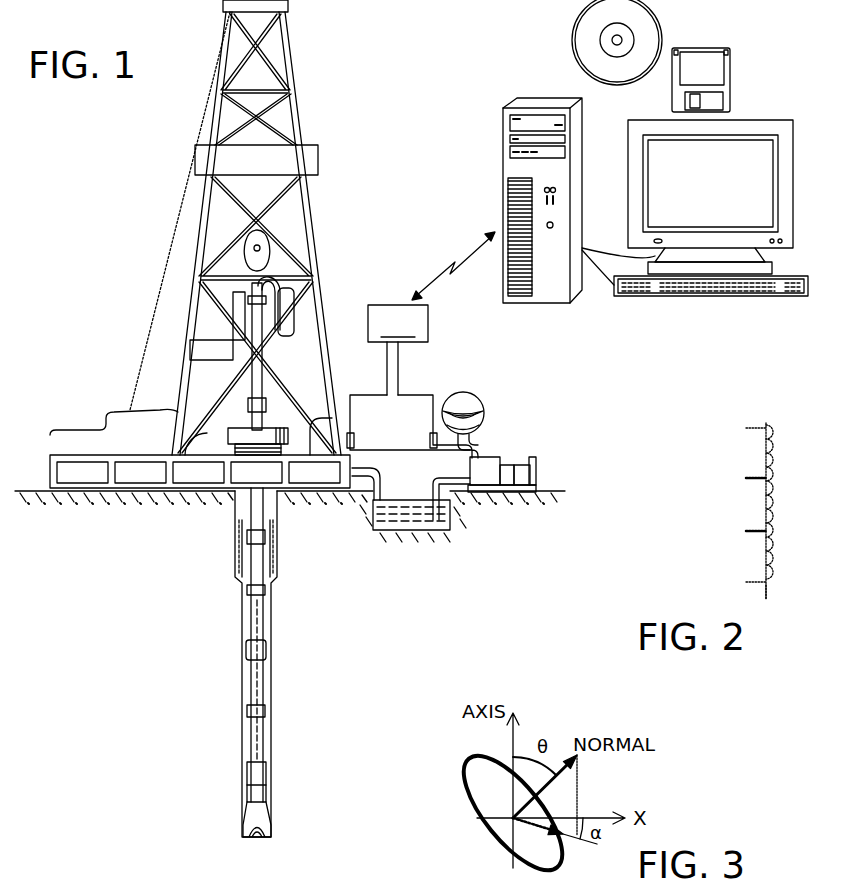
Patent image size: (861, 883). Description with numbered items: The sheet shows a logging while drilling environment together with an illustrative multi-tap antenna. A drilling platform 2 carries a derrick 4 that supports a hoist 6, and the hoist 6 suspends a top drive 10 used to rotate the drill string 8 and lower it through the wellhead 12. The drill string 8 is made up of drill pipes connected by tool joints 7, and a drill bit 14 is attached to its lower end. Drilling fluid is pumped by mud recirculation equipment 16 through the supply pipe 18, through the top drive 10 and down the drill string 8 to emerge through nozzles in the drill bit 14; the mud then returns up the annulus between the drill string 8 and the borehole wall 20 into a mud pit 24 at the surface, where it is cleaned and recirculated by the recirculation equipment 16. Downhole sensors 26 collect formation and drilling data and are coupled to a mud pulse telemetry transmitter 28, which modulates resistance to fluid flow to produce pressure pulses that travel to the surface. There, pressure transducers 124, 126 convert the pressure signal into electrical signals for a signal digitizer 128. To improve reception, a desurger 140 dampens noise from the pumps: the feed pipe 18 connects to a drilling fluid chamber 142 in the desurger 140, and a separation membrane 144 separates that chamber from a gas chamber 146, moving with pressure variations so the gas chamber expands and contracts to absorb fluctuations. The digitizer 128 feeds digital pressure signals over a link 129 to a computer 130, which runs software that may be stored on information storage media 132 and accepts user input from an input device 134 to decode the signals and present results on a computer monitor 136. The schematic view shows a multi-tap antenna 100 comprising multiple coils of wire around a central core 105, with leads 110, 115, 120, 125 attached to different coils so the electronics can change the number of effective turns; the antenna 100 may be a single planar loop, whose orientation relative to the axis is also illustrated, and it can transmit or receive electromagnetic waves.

In FIG. 1, the drilling platform 2 is at (50, 458).
In FIG. 1, the derrick 4 is at (302, 114).
In FIG. 1, the hoist 6 is at (268, 245).
In FIG. 1, the tool joints 7 is at (248, 591).
In FIG. 1, the drill string 8 is at (262, 627).
In FIG. 1, the top drive 10 is at (258, 318).
In FIG. 1, the wellhead 12 is at (237, 430).
In FIG. 1, the drill bit 14 is at (265, 823).
In FIG. 1, the mud recirculation equipment 16 is at (485, 465).
In FIG. 1, the supply pipe 18 is at (445, 455).
In FIG. 1, the borehole wall 20 is at (272, 632).
In FIG. 1, the mud pit 24 is at (386, 518).
In FIG. 1, the downhole sensors 26 is at (250, 797).
In FIG. 1, the mud pulse telemetry transmitter 28 is at (250, 780).
In FIG. 2, the multi-tap antenna 100 is at (782, 461).
In FIG. 2, the central core 105 is at (768, 594).
In FIG. 2, the lead 110 is at (729, 429).
In FIG. 2, the lead 115 is at (729, 479).
In FIG. 2, the lead 120 is at (729, 532).
In FIG. 2, the lead 125 is at (729, 583).
In FIG. 1, the pressure transducer 124 is at (432, 440).
In FIG. 1, the pressure transducer 126 is at (353, 436).
In FIG. 1, the signal digitizer 128 is at (398, 350).
In FIG. 1, the communication link 129 is at (453, 266).
In FIG. 1, the computer 130 is at (580, 218).
In FIG. 1, the information storage media 132 is at (687, 46).
In FIG. 1, the input device 134 is at (790, 298).
In FIG. 1, the computer monitor 136 is at (776, 247).
In FIG. 1, the desurger 140 is at (457, 393).
In FIG. 1, the drilling fluid chamber 142 is at (482, 425).
In FIG. 1, the separation membrane 144 is at (475, 417).
In FIG. 1, the gas chamber 146 is at (470, 405).